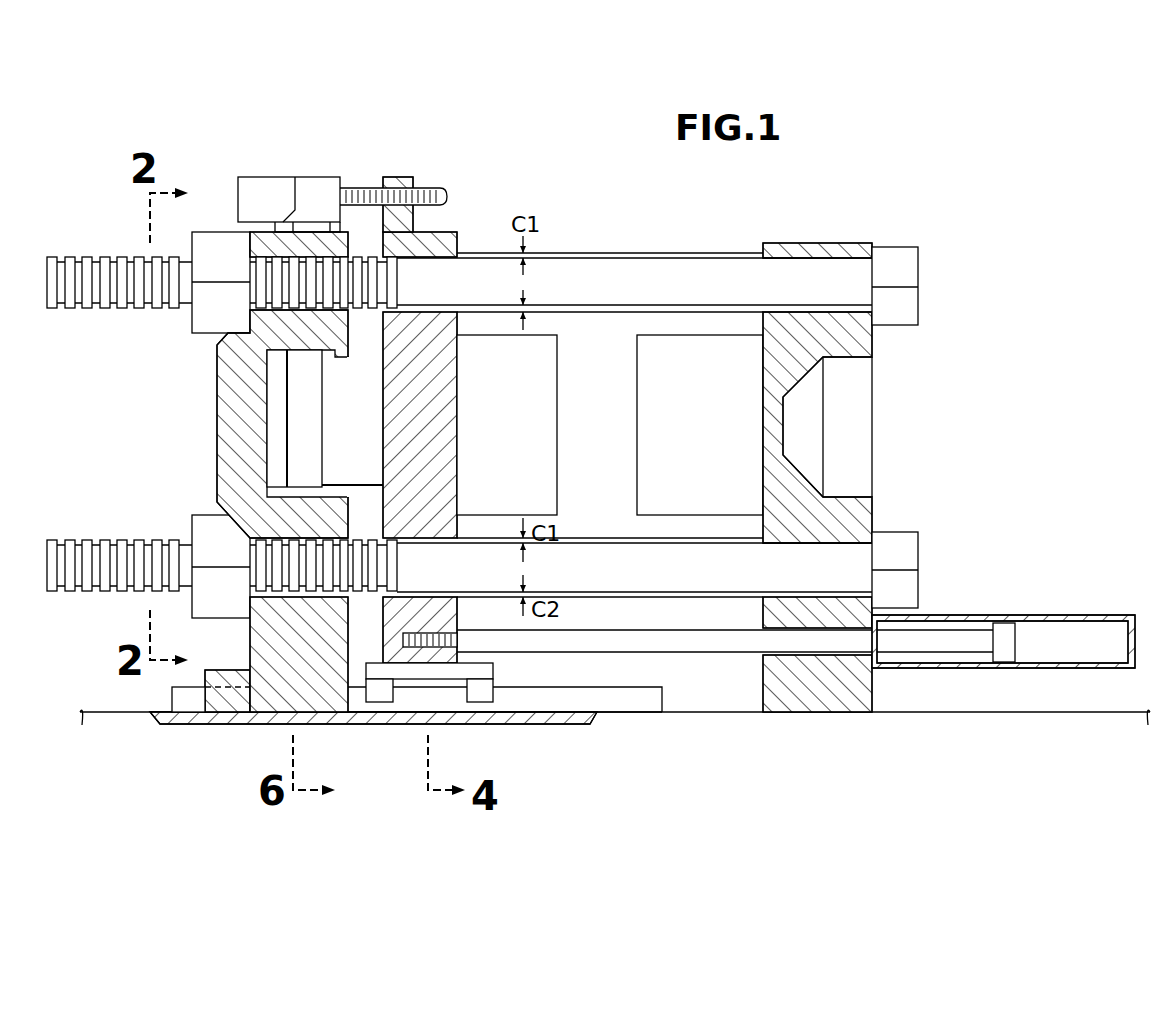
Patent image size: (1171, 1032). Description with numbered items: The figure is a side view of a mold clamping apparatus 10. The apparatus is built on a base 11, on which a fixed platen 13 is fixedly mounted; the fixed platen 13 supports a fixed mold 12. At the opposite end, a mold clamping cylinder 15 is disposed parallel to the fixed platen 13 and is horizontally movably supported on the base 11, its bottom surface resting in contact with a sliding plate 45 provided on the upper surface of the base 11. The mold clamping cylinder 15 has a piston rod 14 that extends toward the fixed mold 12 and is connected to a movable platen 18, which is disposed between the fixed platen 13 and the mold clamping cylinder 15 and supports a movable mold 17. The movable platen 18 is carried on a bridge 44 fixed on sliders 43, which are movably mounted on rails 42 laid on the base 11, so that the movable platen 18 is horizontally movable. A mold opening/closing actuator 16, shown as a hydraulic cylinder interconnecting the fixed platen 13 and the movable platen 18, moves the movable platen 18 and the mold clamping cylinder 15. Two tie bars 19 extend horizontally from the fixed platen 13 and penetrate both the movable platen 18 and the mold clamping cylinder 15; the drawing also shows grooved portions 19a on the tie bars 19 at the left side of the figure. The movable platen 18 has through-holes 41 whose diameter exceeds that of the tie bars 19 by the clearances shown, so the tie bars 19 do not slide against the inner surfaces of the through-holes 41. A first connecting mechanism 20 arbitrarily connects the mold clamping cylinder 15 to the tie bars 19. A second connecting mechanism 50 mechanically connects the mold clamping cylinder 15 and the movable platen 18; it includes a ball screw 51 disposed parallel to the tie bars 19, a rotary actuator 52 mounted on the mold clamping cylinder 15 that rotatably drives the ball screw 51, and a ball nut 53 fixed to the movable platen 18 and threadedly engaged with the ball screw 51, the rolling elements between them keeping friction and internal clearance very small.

The mold clamping apparatus 10 is at (962, 203).
The base 11 is at (745, 735).
The fixed mold 12 is at (665, 450).
The fixed platen 13 is at (812, 243).
The piston rod 14 is at (342, 395).
The mold clamping cylinder 15 is at (238, 428).
The mold opening/closing actuator 16 is at (1025, 670).
The movable mold 17 is at (525, 380).
The movable platen 18 is at (442, 233).
The tie bars 19 is at (620, 285).
The tie bar grooves (ribs) 19a is at (128, 257).
The first connecting mechanism 20 is at (215, 220).
The through-holes 41 is at (440, 268).
The rails 42 is at (628, 702).
The sliders 43 is at (385, 702).
The bridge 44 is at (493, 668).
The sliding plate 45 is at (243, 725).
The second connecting mechanism 50 is at (318, 160).
The ball screw 51 is at (367, 186).
The rotary actuator 52 is at (270, 177).
The ball nut 53 is at (402, 177).